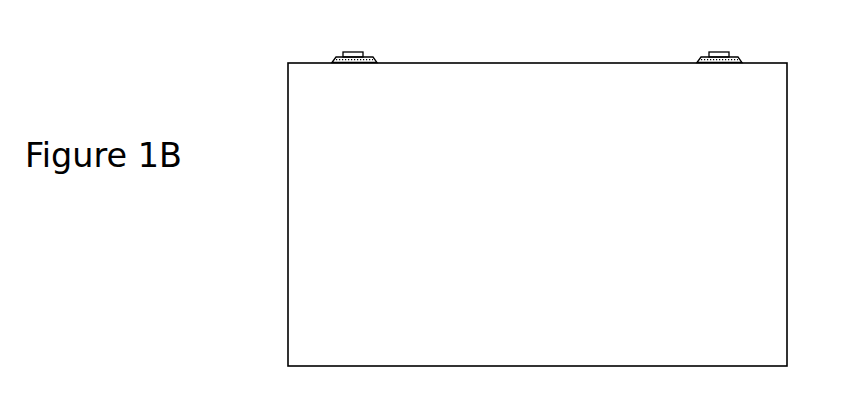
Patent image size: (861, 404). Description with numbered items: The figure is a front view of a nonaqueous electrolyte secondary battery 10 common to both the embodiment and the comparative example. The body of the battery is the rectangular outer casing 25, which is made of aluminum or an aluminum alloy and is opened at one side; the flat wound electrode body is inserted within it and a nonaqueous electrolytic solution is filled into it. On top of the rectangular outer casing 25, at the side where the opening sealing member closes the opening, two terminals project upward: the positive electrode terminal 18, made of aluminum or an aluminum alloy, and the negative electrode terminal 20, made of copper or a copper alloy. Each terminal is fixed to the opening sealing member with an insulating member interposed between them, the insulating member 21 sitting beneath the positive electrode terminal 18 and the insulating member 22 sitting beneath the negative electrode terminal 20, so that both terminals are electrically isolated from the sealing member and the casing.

The nonaqueous electrolyte secondary battery 10 is at (249, 69).
The positive electrode terminal 18 is at (718, 51).
The negative electrode terminal 20 is at (352, 51).
The insulating member 21 is at (737, 58).
The insulating member 22 is at (372, 58).
The rectangular outer casing 25 is at (328, 180).